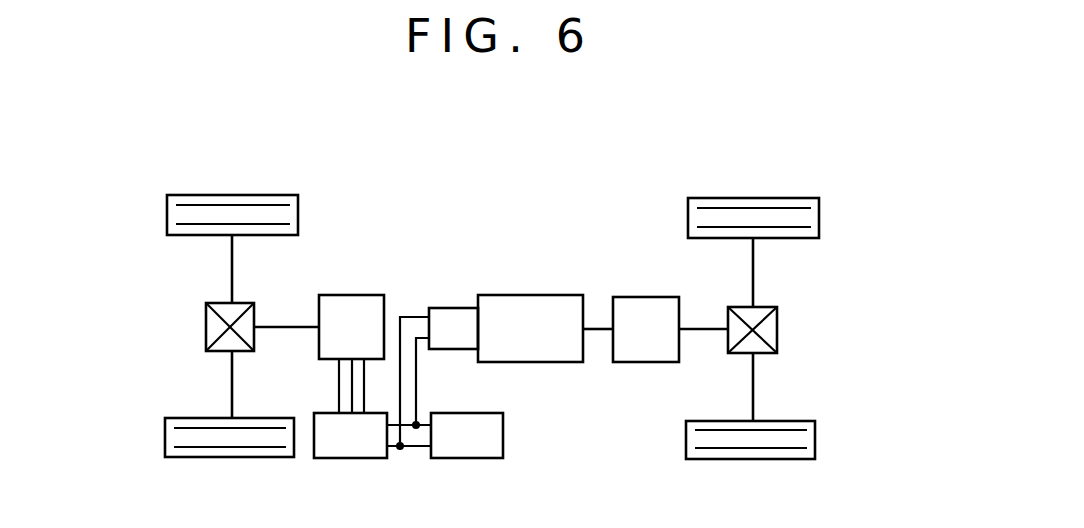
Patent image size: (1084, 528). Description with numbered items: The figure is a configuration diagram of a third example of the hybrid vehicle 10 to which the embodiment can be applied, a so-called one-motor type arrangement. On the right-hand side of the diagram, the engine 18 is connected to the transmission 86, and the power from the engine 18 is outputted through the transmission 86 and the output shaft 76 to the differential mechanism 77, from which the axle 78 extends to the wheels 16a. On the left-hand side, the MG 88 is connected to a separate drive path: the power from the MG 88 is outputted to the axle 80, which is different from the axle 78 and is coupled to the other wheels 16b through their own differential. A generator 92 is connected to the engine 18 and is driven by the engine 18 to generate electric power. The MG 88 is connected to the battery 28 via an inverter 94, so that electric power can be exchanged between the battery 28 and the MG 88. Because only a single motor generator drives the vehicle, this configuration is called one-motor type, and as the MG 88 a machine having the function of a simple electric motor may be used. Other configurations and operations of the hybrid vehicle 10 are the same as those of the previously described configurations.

The hybrid vehicle 10 is at (497, 213).
The wheels 16a is at (820, 216).
The wheels 16b is at (167, 210).
The engine 18 is at (531, 295).
The battery 28 is at (466, 460).
The output shaft 76 is at (707, 328).
The differential mechanism 77 is at (778, 330).
The axle 78 is at (757, 268).
The axle 80 is at (232, 264).
The transmission 86 is at (643, 297).
The MG 88 is at (355, 295).
The generator 92 is at (455, 308).
The inverter 94 is at (352, 460).